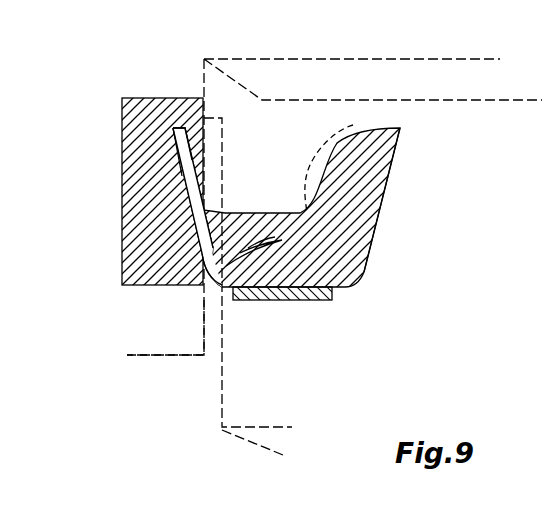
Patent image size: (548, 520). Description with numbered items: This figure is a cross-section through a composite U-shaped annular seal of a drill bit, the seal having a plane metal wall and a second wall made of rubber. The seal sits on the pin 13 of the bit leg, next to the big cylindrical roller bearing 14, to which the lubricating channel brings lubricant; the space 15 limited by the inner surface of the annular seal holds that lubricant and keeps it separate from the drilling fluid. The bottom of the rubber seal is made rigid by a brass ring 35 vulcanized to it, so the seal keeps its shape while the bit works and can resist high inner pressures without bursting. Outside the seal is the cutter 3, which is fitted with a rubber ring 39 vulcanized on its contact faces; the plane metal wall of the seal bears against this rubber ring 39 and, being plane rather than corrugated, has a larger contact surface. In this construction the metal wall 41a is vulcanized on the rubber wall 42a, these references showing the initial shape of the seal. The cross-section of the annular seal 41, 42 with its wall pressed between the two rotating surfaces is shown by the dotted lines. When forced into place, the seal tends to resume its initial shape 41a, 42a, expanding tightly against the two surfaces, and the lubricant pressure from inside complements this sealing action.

The cutter 3 is at (167, 312).
The pin 13 is at (230, 367).
The cylindrical roller bearing 14 is at (287, 72).
The space 15 is at (316, 128).
The brass ring 35 is at (285, 293).
The rubber ring 39 is at (132, 283).
The metal wall of the annular seal 41 is at (210, 130).
The metal wall 41a is at (192, 176).
The rubber wall of the annular seal 42 is at (318, 167).
The rubber wall 42a is at (347, 225).